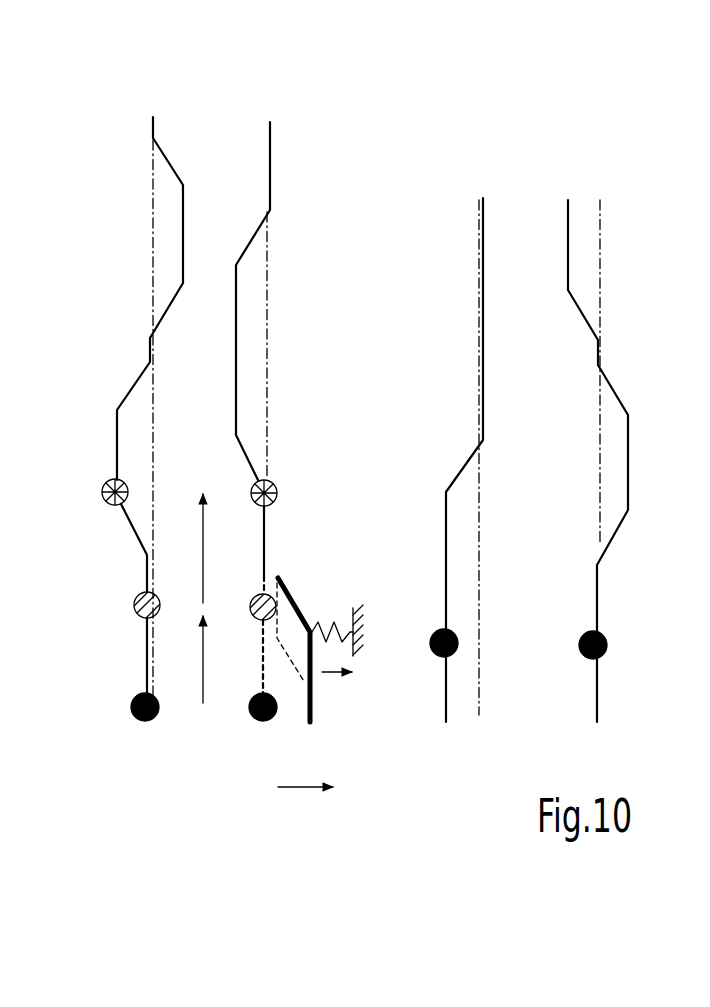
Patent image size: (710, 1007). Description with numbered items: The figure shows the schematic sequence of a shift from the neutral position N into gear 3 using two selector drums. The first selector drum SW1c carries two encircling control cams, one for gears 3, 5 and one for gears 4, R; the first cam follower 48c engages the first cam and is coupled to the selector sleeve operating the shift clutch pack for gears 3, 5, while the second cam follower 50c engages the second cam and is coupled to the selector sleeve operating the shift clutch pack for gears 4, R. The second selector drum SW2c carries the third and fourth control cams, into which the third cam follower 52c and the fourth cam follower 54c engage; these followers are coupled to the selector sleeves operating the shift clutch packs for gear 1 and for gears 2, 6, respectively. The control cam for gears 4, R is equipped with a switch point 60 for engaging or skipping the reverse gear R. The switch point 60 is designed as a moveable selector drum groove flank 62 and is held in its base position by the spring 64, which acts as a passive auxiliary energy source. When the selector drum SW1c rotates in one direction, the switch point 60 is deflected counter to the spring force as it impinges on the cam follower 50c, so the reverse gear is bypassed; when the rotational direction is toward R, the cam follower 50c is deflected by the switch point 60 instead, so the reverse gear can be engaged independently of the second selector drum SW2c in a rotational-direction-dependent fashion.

The first selector drum SW1c is at (220, 118).
The second selector drum SW2c is at (530, 152).
The gear 1 is at (453, 460).
The gear 2 is at (623, 543).
The gear 3 is at (225, 621).
The gear 4 is at (250, 358).
The gear 5 is at (161, 298).
The gear 6 is at (570, 282).
The first cam follower 48c is at (133, 714).
The second cam follower 50c is at (250, 716).
The third cam follower 52c is at (431, 650).
The fourth cam follower 54c is at (607, 648).
The switch point 60 is at (293, 561).
The moveable selector drum groove flank 62 is at (314, 713).
The spring 64 is at (338, 628).
The reverse gear R is at (336, 689).
The neutral position N is at (293, 787).